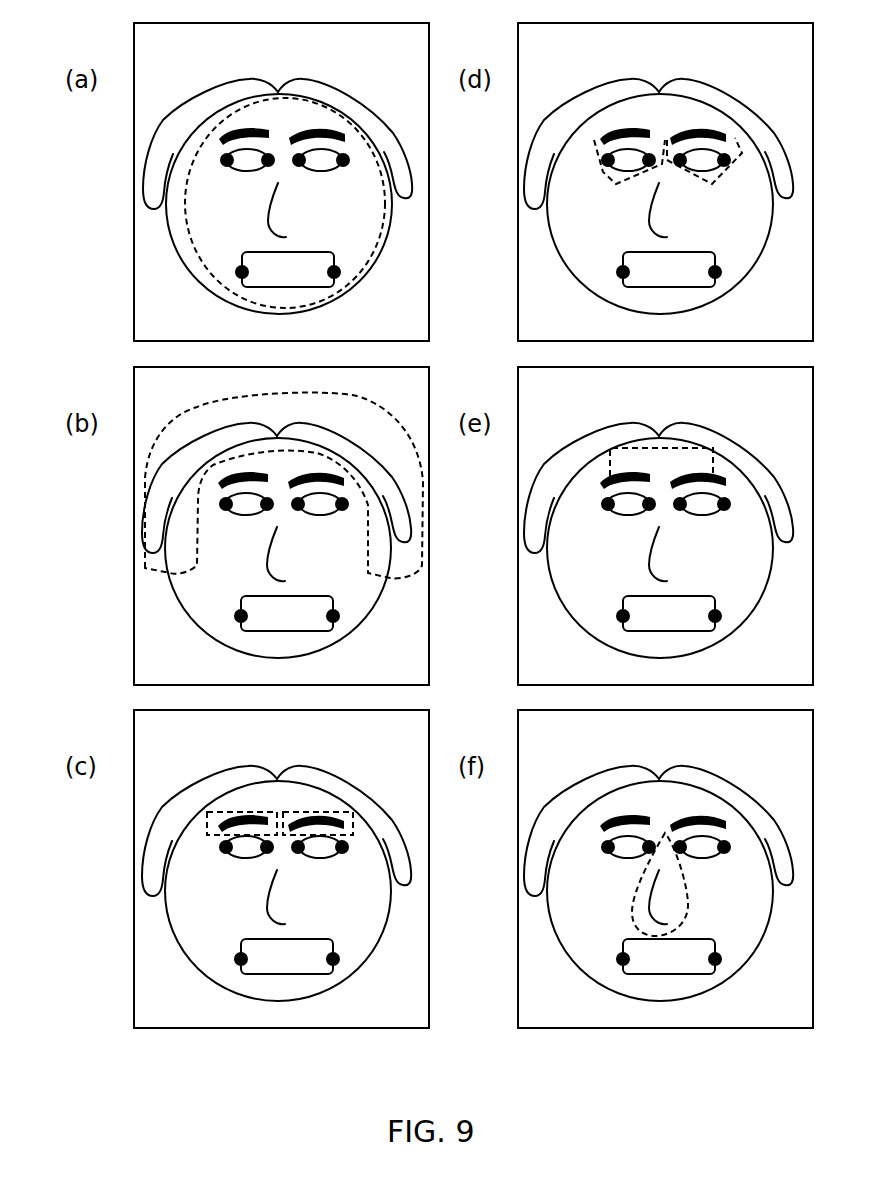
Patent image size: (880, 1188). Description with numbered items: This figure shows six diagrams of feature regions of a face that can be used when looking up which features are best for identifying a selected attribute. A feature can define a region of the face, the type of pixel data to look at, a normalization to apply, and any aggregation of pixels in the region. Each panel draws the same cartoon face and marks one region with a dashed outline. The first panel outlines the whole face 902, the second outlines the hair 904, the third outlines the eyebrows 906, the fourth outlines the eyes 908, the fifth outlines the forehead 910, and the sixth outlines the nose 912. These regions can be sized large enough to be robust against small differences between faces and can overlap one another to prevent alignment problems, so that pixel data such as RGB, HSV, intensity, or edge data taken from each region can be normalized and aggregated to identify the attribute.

The whole face 902 is at (200, 262).
The hair 904 is at (163, 570).
The eyebrows 906 is at (285, 836).
The eyes 908 is at (609, 184).
The forehead 910 is at (668, 478).
The nose 912 is at (632, 917).